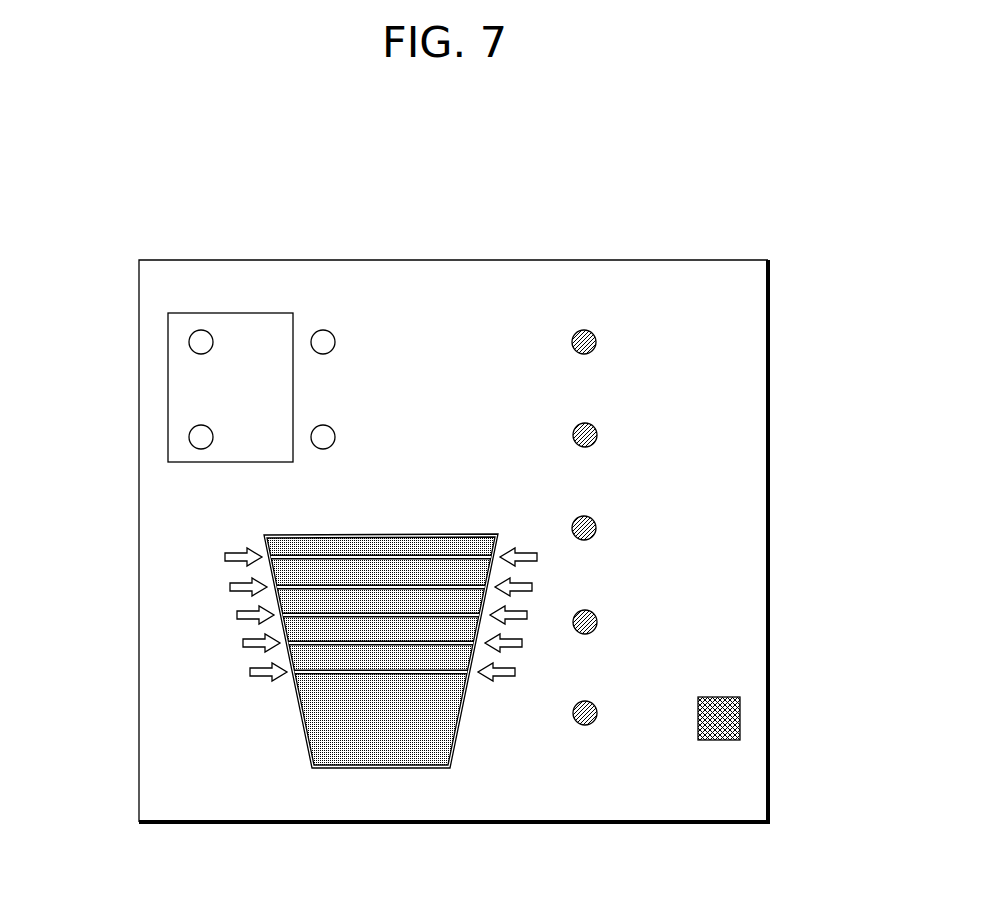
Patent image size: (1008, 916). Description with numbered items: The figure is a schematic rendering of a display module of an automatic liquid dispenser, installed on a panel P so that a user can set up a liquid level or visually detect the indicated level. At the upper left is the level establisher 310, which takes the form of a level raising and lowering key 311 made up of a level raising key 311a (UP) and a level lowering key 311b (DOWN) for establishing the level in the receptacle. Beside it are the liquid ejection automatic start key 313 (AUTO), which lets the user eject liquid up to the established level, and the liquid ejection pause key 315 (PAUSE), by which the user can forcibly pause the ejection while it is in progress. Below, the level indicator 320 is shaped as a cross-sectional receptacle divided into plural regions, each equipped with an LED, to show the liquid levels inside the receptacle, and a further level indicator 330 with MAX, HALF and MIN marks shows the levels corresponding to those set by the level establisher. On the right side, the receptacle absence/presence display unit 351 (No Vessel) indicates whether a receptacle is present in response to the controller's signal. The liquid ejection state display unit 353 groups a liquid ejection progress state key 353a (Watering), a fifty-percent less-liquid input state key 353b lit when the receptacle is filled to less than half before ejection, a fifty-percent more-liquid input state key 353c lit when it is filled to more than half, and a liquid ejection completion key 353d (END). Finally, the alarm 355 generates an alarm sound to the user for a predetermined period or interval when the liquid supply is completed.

The panel P is at (700, 260).
The level establisher 310 is at (231, 313).
The level raising and lowering key 311 is at (110, 390).
The level raising key 311a is at (191, 344).
The level lowering key 311b is at (191, 439).
The liquid ejection automatic start key 313 is at (329, 332).
The liquid ejection pause key 315 is at (329, 426).
The level indicator 320 is at (300, 527).
The level indicator 330 is at (268, 675).
The receptacle absence/presence display unit 351 is at (573, 426).
The liquid ejection state display unit 353 is at (746, 529).
The liquid ejection progress state key 353a is at (597, 348).
The 50% less-liquid input state key 353b is at (597, 518).
The 50% more-liquid input state key 353c is at (596, 611).
The liquid ejection completion key 353d is at (597, 704).
The alarm 355 is at (740, 714).